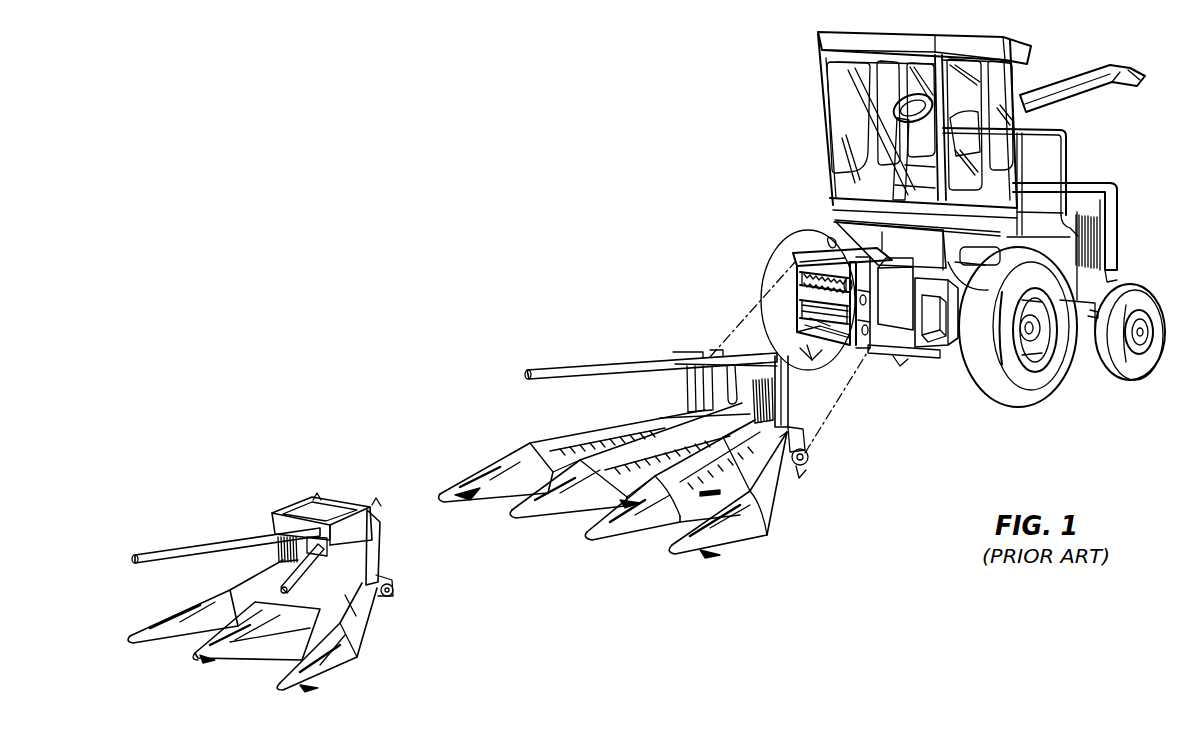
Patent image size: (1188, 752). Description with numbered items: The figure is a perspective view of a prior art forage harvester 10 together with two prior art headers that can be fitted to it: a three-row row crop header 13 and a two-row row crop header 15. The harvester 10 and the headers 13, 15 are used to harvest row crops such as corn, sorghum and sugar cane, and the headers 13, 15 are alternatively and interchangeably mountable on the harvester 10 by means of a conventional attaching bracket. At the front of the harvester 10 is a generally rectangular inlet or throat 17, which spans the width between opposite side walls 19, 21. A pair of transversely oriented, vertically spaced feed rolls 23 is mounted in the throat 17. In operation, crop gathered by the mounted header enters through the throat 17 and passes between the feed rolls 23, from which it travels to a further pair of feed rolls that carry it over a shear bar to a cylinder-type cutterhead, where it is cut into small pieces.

The forage harvester 10 is at (1134, 188).
The three-row row crop header 13 is at (790, 487).
The two-row row crop header 15 is at (400, 590).
The throat 17 is at (800, 270).
The side wall 19 is at (812, 278).
The side wall 21 is at (870, 345).
The feed rolls 23 is at (806, 313).